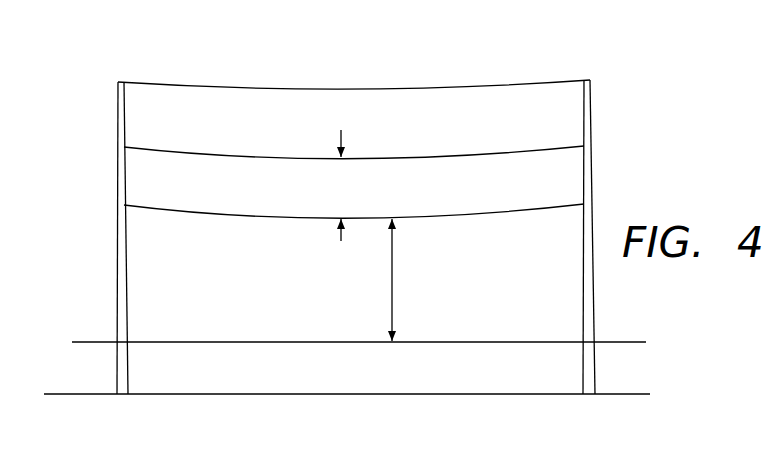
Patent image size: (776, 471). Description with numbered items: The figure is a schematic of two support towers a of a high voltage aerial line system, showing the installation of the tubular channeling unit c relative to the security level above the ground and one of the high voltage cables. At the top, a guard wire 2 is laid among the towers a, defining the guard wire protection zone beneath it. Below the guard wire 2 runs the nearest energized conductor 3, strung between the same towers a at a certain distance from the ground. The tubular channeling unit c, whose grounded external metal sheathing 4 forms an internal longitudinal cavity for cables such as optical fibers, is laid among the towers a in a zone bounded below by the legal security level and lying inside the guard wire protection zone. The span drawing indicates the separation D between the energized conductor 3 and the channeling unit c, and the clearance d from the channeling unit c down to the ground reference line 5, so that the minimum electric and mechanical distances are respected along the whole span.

The guard wire 2 is at (446, 85).
The energized conductor 3 is at (477, 152).
The grounded external metal sheathing 4 is at (486, 208).
The reference line 5 is at (92, 342).
The support tower a is at (108, 138).
The distance D is at (351, 172).
The distance d is at (404, 280).
The tubular channeling unit c is at (509, 212).